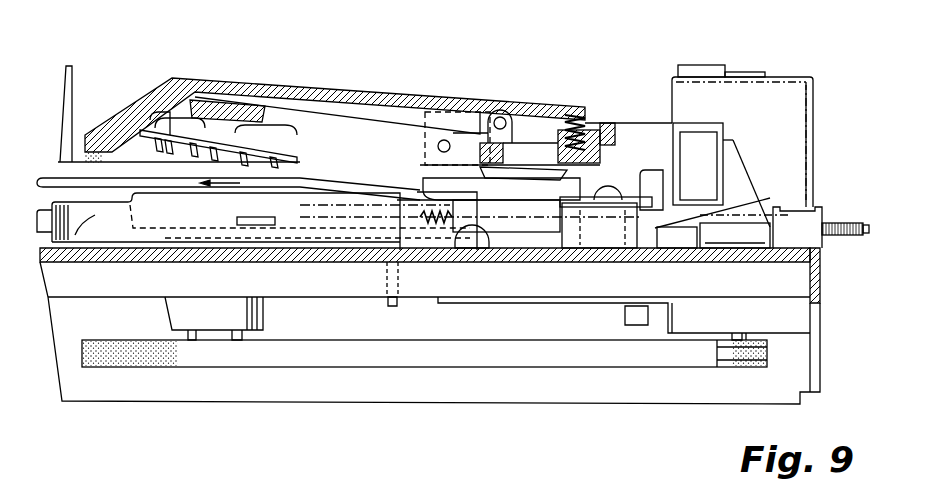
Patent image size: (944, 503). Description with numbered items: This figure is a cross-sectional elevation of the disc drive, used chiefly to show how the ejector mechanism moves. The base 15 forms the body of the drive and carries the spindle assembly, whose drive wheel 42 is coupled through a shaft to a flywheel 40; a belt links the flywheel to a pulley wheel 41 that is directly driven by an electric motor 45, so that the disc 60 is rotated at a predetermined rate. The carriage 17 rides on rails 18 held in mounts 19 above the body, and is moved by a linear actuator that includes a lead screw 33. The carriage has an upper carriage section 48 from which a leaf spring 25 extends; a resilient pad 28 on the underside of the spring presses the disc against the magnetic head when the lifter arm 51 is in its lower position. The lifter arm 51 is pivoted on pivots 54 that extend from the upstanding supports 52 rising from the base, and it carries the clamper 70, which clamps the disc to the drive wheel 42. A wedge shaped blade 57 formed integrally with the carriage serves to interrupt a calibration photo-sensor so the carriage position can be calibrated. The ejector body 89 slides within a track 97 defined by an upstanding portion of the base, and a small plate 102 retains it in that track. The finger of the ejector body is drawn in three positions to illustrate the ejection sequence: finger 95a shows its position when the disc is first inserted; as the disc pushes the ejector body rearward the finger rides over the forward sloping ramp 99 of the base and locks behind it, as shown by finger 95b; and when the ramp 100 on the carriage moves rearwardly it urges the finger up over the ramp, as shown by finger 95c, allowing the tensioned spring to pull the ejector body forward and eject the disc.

The base 15 is at (822, 290).
The carriage 17 is at (92, 225).
The rails 18 is at (47, 232).
The mounts 19 is at (815, 243).
The leaf spring 25 is at (355, 90).
The resilient pad 28 is at (97, 135).
The lead screw 33 is at (868, 232).
The flywheel 40 is at (240, 365).
The pulley wheel 41 is at (732, 367).
The drive wheel 42 is at (305, 172).
The electric motor 45 is at (813, 108).
The upper carriage section 48 is at (612, 122).
The lifter arm 51 is at (312, 125).
The supports 52 is at (445, 112).
The pivots 54 is at (440, 140).
The wedge shaped blade 57 is at (262, 222).
The disc 60 is at (57, 180).
The clamper 70 is at (170, 122).
The ejector body 89 is at (578, 185).
The finger (first position) 95a is at (652, 200).
The finger (latched position) 95b is at (768, 228).
The finger (released position) 95c is at (712, 190).
The track 97 is at (600, 232).
The forward sloping ramp 99 is at (693, 240).
The ramp 100 is at (767, 233).
The small plate 102 is at (580, 202).